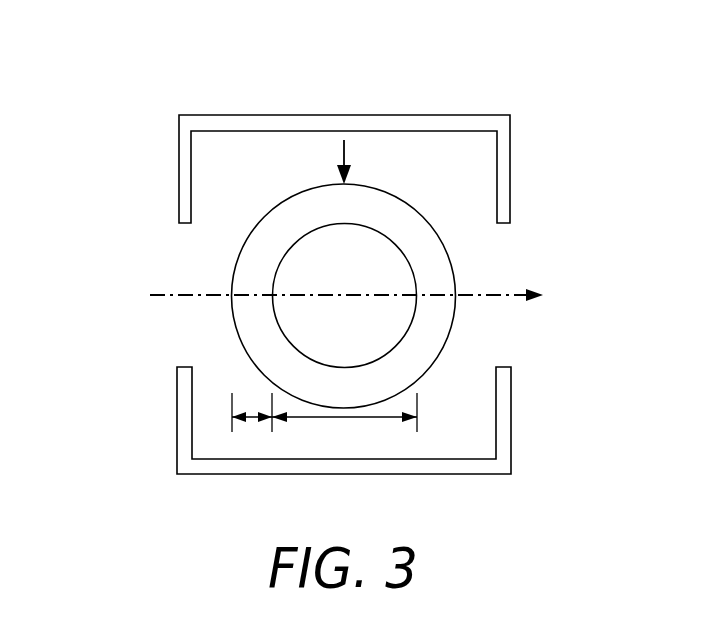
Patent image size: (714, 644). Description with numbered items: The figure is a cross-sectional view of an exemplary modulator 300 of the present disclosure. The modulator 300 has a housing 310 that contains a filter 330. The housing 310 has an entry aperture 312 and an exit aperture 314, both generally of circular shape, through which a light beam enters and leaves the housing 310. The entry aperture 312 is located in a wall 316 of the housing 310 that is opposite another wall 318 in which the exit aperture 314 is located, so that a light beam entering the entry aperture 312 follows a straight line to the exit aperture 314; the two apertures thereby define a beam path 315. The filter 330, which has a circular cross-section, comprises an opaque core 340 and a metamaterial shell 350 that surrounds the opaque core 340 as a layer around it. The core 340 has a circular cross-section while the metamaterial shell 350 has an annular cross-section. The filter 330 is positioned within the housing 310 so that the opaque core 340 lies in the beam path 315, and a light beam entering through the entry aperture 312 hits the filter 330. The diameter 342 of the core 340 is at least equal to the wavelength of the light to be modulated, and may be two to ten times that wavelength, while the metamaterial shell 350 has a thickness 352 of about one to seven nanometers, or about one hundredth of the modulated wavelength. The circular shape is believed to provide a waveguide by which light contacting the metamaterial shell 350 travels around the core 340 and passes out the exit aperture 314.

The modulator 300 is at (116, 83).
The housing 310 is at (343, 115).
The entry aperture 312 is at (180, 248).
The exit aperture 314 is at (505, 253).
The beam path 315 is at (150, 295).
The wall 316 is at (178, 415).
The wall 318 is at (511, 415).
The filter 330 is at (334, 273).
The opaque core 340 is at (383, 235).
The diameter 342 is at (362, 419).
The metamaterial shell 350 is at (298, 215).
The thickness 352 is at (253, 419).